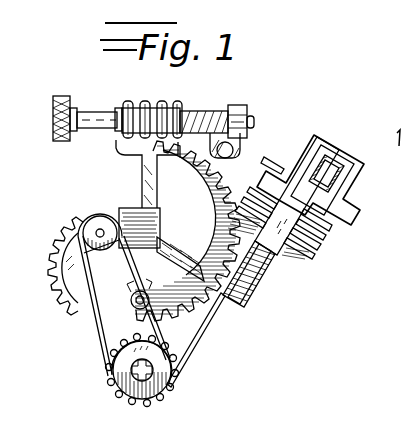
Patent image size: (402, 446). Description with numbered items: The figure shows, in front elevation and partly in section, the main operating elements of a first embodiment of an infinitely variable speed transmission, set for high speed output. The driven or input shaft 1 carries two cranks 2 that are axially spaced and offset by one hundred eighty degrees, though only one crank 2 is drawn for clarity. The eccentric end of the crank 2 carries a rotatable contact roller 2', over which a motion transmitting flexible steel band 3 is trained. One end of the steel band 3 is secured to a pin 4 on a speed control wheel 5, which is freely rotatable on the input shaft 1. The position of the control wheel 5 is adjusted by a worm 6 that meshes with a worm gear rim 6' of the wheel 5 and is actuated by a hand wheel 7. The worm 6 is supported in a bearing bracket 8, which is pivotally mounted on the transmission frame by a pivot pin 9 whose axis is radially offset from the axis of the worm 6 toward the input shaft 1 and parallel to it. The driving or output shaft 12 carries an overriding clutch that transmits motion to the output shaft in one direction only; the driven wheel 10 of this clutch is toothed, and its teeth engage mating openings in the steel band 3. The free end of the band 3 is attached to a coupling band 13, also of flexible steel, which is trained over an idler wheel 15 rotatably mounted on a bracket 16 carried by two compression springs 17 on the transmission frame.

The input shaft 1 is at (157, 227).
The crank 2 is at (106, 216).
The contact roller 2' is at (92, 215).
The flexible steel band 3 is at (94, 330).
The pin 4 is at (147, 297).
The speed control wheel 5 is at (151, 174).
The worm 6 is at (148, 108).
The worm gear rim 6' is at (50, 266).
The hand wheel 7 is at (53, 121).
The bearing bracket 8 is at (194, 110).
The pivot pin 9 is at (234, 151).
The driven wheel 10 is at (119, 388).
The output shaft 12 is at (168, 390).
The coupling band 13 is at (268, 254).
The idler wheel 15 is at (324, 176).
The bracket 16 is at (338, 195).
The compression springs 17 is at (265, 176).